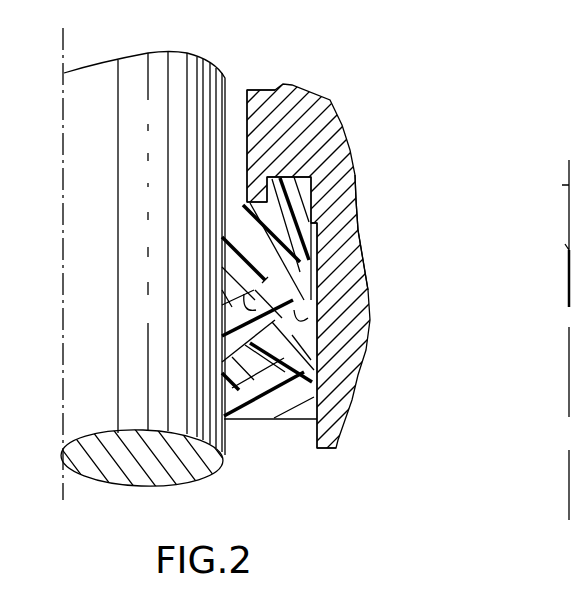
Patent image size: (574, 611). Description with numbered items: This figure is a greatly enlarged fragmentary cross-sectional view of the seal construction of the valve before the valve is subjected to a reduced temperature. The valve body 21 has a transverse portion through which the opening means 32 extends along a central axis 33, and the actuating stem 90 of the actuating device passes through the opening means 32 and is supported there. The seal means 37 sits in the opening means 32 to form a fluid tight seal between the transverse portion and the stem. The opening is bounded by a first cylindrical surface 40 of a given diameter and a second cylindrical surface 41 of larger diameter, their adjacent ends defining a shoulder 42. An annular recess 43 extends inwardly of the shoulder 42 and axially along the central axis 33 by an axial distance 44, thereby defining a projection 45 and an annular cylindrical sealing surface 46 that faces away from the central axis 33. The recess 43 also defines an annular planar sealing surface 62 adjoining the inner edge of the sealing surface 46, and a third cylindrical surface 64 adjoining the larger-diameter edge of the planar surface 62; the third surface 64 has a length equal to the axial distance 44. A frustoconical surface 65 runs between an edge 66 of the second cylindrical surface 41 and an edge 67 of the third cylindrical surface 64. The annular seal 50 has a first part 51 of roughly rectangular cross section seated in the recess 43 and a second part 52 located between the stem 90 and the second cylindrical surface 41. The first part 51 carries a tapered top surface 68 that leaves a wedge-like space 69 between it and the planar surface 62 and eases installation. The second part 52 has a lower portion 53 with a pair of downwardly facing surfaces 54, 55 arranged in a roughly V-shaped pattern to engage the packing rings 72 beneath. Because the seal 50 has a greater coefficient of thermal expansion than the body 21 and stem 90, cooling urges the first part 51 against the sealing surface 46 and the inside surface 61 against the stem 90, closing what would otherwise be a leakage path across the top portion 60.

The valve body 21 is at (322, 90).
The opening means 32 is at (262, 110).
The central axis 33 is at (64, 38).
The seal means 37 is at (272, 432).
The first cylindrical surface 40 is at (240, 84).
The second cylindrical surface 41 is at (313, 444).
The shoulder 42 is at (250, 230).
The annular recess 43 is at (302, 175).
The axial distance 44 is at (311, 175).
The projection 45 is at (255, 197).
The sealing surface 46 is at (250, 200).
The annular seal 50 is at (366, 266).
The first part 51 is at (255, 187).
The second part 52 is at (300, 272).
The lower portion 53 is at (303, 296).
The downwardly facing surface 54 is at (240, 320).
The downwardly facing surface 55 is at (305, 350).
The top portion 60 is at (252, 216).
The inside surface 61 is at (240, 260).
The annular planar sealing surface 62 is at (294, 175).
The third cylindrical surface 64 is at (318, 202).
The frustoconical surface 65 is at (358, 240).
The edge 66 is at (326, 247).
The edge 67 is at (318, 224).
The tapered top surface 68 is at (298, 175).
The wedge-like space 69 is at (308, 176).
The packing rings 72 is at (302, 410).
The actuating stem 90 is at (180, 58).